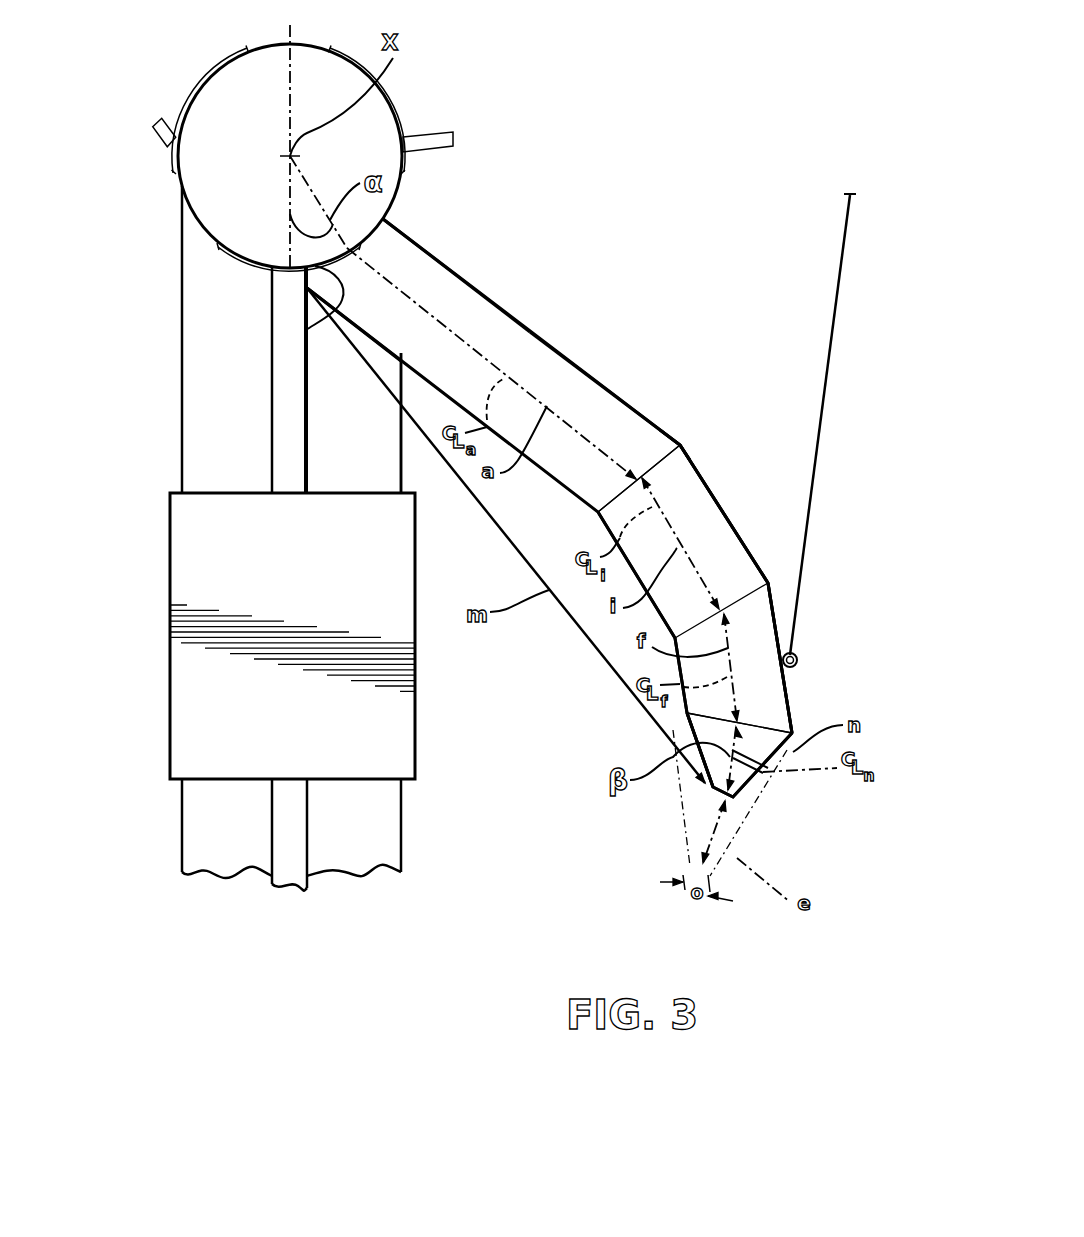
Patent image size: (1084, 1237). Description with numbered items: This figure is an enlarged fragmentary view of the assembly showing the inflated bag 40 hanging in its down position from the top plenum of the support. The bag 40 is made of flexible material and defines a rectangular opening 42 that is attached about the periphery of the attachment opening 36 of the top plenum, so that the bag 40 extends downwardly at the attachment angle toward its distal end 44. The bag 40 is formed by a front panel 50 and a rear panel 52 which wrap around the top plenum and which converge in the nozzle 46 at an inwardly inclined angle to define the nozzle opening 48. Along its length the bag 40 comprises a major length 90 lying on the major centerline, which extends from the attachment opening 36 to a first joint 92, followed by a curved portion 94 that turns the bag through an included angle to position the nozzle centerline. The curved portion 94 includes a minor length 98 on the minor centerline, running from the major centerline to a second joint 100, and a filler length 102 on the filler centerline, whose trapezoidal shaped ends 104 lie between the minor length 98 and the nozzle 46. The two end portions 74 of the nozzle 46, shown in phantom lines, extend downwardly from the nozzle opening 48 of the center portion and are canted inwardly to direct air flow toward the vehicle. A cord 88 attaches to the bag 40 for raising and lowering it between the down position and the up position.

The attachment opening 36 is at (350, 252).
The bag 40 is at (609, 386).
The opening 42 is at (307, 288).
The distal end 44 is at (690, 740).
The nozzle 46 is at (762, 773).
The nozzle opening 48 is at (731, 797).
The front panel 50 is at (473, 289).
The rear panel 52 is at (389, 352).
The end portions 74 is at (667, 803).
The cord 88 is at (832, 328).
The major length 90 is at (526, 336).
The first joint 92 is at (682, 448).
The curved portion 94 is at (760, 554).
The minor length 98 is at (697, 490).
The second joint 100 is at (745, 585).
The filler length 102 is at (768, 632).
The trapezoidal shaped ends 104 is at (760, 728).